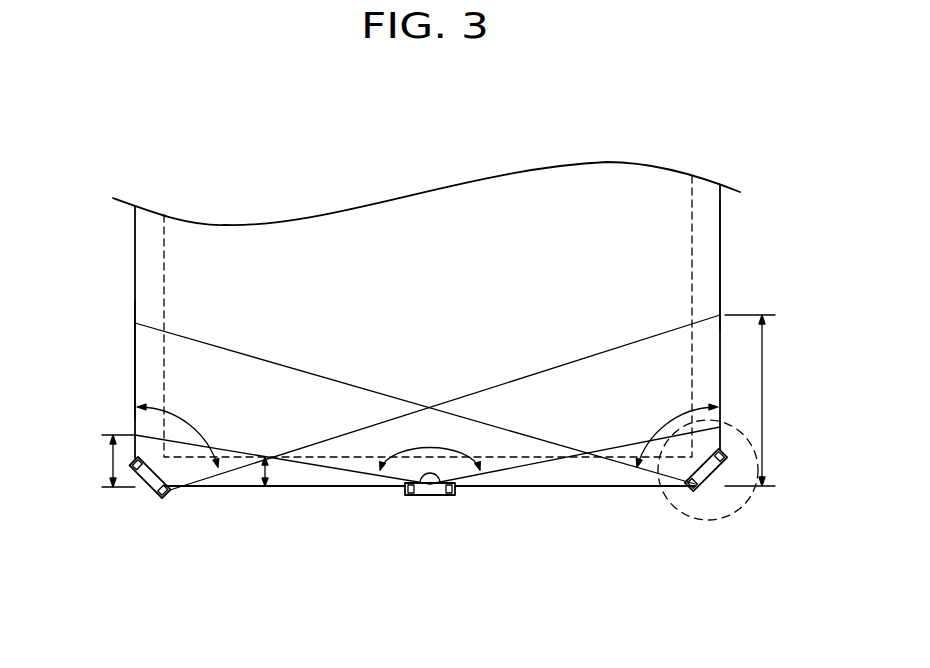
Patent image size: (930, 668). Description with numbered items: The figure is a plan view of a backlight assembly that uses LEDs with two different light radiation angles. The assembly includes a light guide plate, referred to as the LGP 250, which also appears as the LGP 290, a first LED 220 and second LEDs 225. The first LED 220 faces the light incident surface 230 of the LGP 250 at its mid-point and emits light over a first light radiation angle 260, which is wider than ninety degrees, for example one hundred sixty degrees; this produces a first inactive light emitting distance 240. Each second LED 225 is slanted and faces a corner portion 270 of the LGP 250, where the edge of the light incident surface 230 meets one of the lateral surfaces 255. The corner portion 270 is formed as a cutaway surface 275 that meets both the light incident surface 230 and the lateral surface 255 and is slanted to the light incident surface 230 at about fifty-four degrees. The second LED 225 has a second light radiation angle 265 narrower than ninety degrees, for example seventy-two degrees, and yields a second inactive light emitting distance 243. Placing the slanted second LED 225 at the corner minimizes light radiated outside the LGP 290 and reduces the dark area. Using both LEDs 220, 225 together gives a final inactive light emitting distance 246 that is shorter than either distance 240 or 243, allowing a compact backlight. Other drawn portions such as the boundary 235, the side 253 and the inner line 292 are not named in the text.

The first LED 220 is at (432, 496).
The second LED 225 is at (142, 488).
The light incident surface 230 is at (536, 488).
The bottom wall portion 235 is at (331, 488).
The first inactive light emitting distance 240 is at (101, 461).
The second inactive light emitting distance 243 is at (769, 400).
The final inactive light emitting distance 246 is at (288, 472).
The LGP 250 is at (670, 237).
The housing side wall 253 is at (720, 270).
The lateral surface 255 is at (135, 358).
The first light radiation angle 260 is at (430, 443).
The second light radiation angle 265 is at (427, 429).
The corner portion 270 is at (665, 490).
The cutaway surface 275 is at (716, 485).
The LGP 290 is at (398, 241).
The interior boundary 292 is at (153, 260).